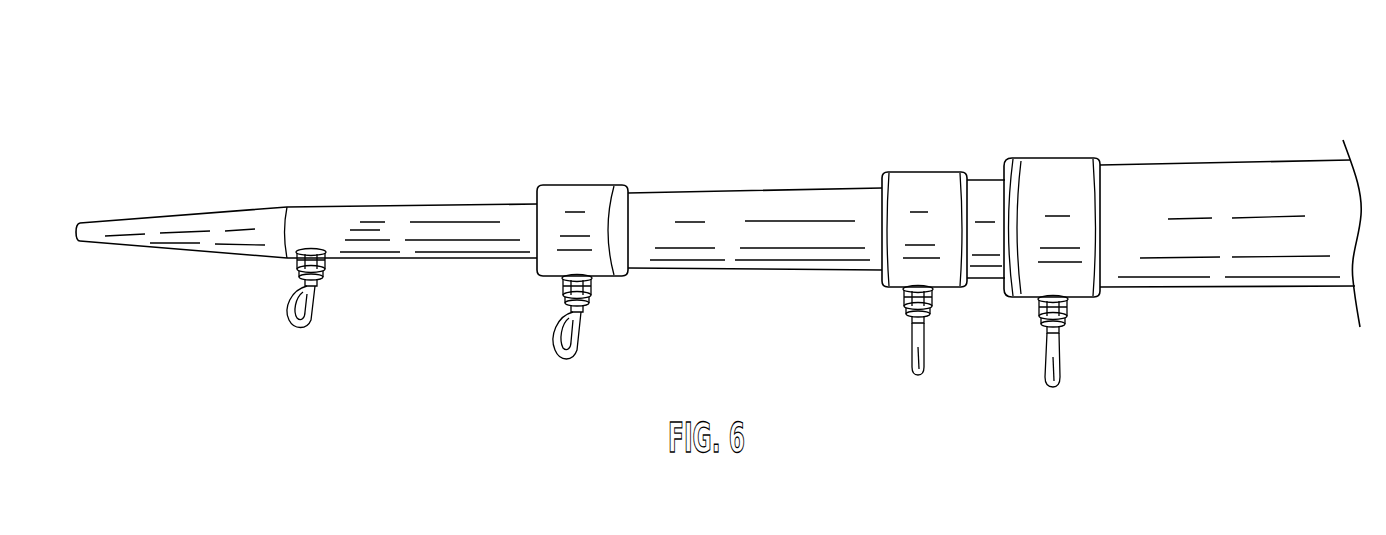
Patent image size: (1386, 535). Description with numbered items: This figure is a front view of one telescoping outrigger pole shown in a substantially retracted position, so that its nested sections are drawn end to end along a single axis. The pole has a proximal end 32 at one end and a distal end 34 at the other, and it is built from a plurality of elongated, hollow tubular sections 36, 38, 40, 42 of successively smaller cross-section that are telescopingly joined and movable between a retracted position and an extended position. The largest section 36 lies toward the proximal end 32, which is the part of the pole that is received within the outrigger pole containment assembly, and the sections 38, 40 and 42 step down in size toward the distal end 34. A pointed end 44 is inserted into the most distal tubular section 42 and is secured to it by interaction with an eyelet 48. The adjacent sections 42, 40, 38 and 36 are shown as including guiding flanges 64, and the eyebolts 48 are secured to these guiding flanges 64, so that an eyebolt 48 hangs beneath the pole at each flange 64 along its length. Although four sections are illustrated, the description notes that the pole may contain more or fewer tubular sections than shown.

The proximal end 32 is at (1372, 337).
The distal end 34 is at (176, 172).
The tubular section 36 is at (1222, 283).
The tubular section 38 is at (990, 265).
The tubular section 40 is at (760, 235).
The most distal tubular section 42 is at (465, 232).
The pointed end 44 is at (226, 243).
The eyelet 48 is at (310, 318).
The guiding flange 64 is at (592, 185).